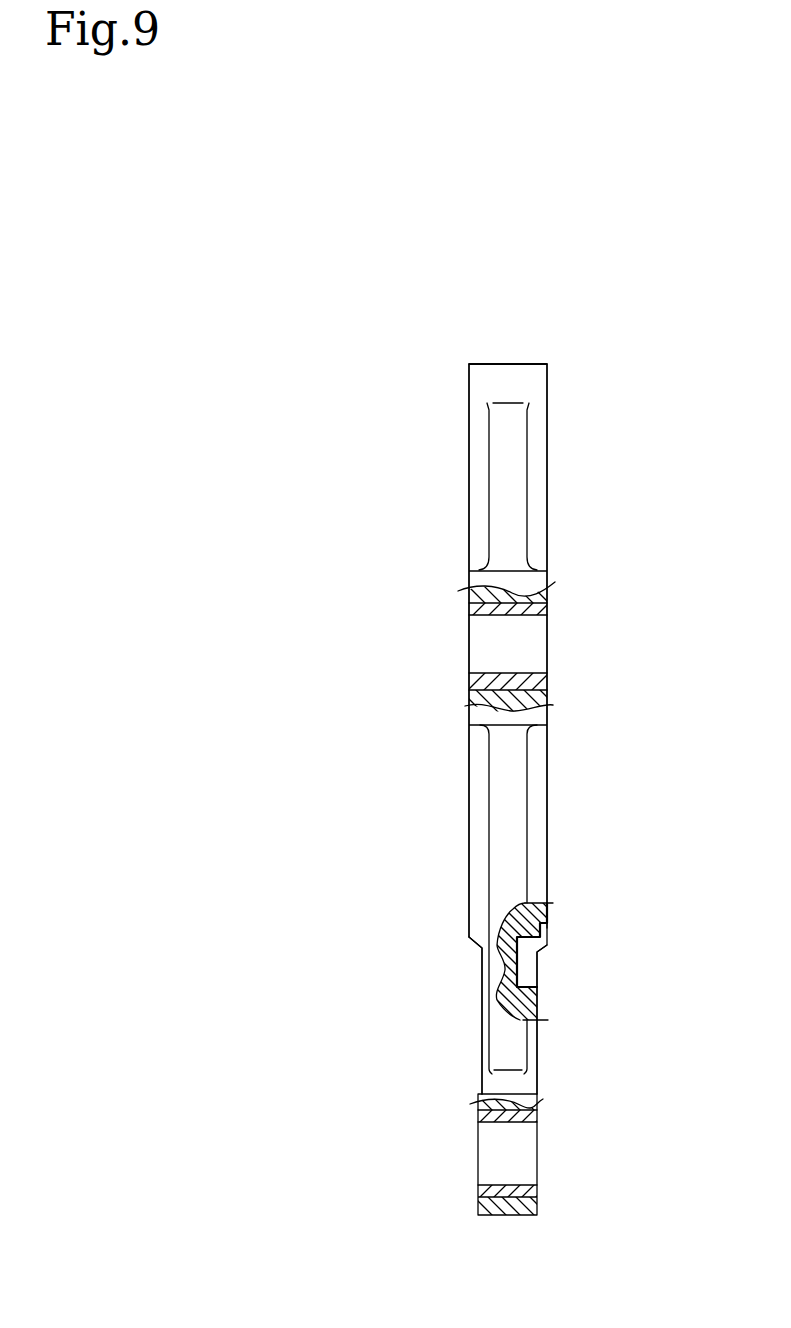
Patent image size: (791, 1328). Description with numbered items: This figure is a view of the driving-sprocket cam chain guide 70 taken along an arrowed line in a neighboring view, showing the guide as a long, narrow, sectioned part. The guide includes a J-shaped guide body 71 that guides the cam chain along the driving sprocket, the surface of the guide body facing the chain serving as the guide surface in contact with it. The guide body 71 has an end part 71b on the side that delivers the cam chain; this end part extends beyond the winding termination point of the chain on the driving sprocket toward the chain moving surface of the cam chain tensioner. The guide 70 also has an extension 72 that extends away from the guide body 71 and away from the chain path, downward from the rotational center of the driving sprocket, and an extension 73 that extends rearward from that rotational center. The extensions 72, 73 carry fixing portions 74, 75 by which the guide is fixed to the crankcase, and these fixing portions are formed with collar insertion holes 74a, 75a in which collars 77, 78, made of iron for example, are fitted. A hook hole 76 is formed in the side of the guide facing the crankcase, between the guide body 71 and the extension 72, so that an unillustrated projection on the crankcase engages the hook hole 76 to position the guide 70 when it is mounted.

The driving-sprocket cam chain guide 70 is at (560, 325).
The guide body 71 is at (468, 489).
The end part 71b is at (498, 362).
The extension 73 is at (490, 547).
The collar insertion hole 75a is at (547, 626).
The collar 78 is at (547, 685).
The fixing portion 75 is at (545, 717).
The hook hole 76 is at (523, 962).
The extension 72 is at (490, 1047).
The collar insertion hole 74a is at (513, 1122).
The collar 77 is at (537, 1192).
The fixing portion 74 is at (520, 1208).